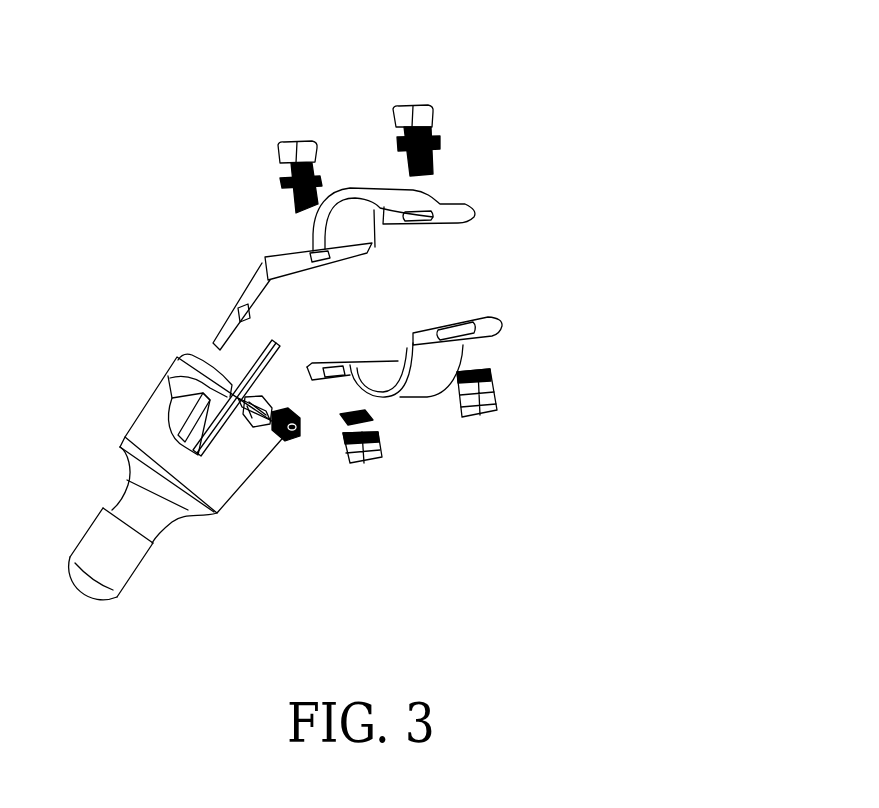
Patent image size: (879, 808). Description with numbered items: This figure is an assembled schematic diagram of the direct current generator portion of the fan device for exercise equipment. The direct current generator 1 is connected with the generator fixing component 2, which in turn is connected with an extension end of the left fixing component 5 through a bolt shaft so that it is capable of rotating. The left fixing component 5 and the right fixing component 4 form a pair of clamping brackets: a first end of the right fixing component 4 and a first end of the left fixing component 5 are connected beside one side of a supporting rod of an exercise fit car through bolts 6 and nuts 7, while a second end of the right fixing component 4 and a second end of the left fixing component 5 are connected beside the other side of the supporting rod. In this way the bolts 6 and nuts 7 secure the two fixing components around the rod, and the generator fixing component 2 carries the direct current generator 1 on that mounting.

The direct current generator 1 is at (215, 513).
The generator fixing component 2 is at (188, 395).
The right fixing component 4 is at (505, 333).
The left fixing component 5 is at (463, 200).
The bolts 6 is at (408, 108).
The nuts 7 is at (492, 415).